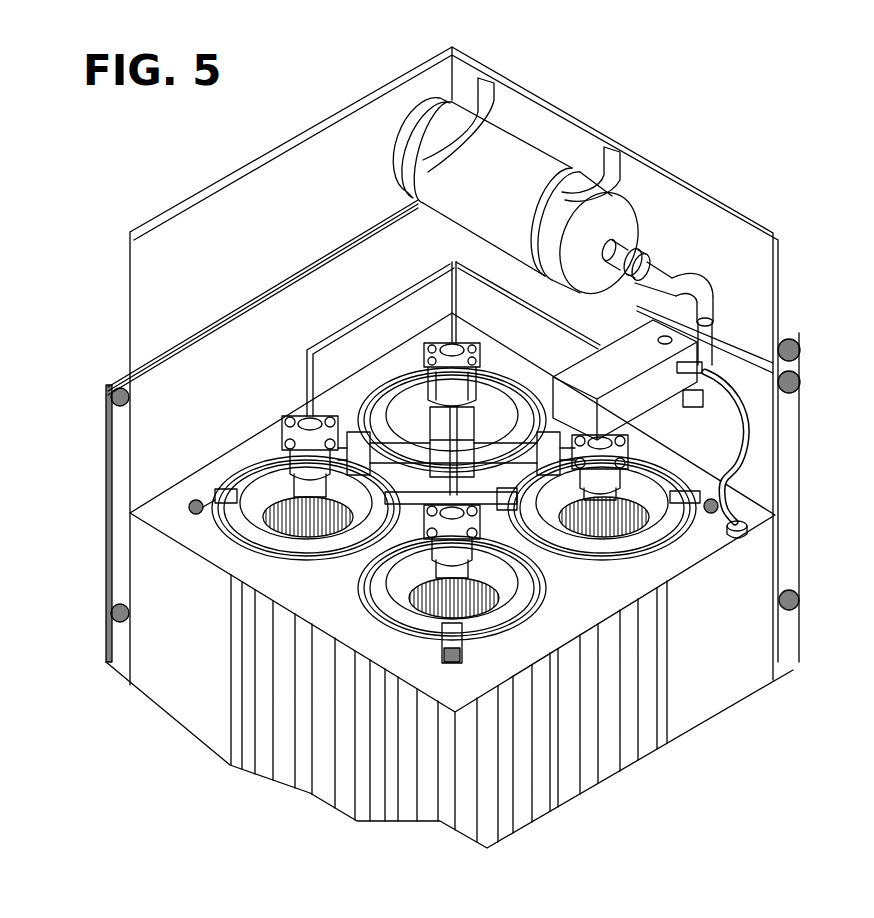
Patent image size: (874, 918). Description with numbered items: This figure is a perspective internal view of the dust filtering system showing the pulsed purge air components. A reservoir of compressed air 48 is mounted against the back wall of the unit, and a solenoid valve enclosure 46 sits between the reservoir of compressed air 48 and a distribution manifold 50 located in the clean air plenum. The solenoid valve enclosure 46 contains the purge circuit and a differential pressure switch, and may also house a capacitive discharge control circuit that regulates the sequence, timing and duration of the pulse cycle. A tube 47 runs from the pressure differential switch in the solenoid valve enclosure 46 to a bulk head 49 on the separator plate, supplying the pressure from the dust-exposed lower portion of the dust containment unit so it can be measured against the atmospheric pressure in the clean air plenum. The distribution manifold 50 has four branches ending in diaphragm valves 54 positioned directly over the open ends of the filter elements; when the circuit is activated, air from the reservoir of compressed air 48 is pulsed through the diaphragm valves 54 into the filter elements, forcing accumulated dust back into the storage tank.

The solenoid valve enclosure 46 is at (628, 385).
The tube 47 is at (718, 385).
The reservoir of compressed air 48 is at (497, 157).
The bulk head 49 is at (747, 532).
The distribution manifold 50 is at (457, 380).
The diaphragm valves 54 is at (298, 463).